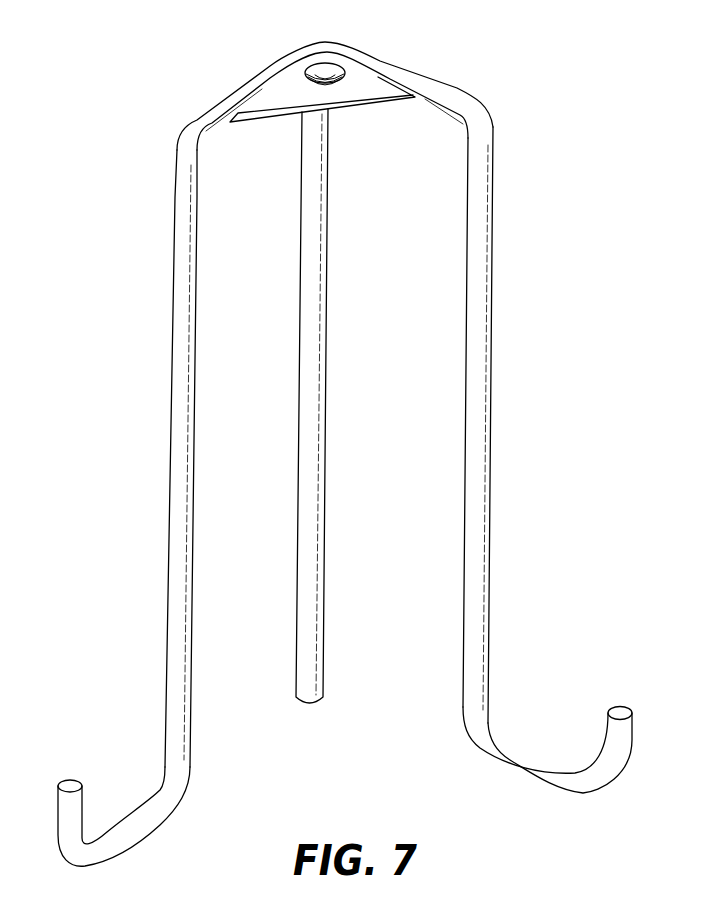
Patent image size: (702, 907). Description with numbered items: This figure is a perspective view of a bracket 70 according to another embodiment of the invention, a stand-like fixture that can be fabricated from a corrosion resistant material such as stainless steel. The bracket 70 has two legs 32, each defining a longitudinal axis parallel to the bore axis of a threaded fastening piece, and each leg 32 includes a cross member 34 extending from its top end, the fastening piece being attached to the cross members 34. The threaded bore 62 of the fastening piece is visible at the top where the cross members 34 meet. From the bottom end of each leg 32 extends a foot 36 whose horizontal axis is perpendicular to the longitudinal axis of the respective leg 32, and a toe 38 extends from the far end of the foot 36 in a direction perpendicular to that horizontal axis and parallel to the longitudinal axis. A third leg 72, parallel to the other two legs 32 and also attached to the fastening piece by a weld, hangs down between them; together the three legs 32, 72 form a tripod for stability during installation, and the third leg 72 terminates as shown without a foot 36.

The bracket 70 is at (345, 448).
The cross member 34 is at (412, 73).
The threaded hole 62 is at (292, 85).
The leg 32 is at (493, 322).
The foot 36 is at (537, 785).
The toe 38 is at (607, 725).
The third leg 72 is at (320, 434).